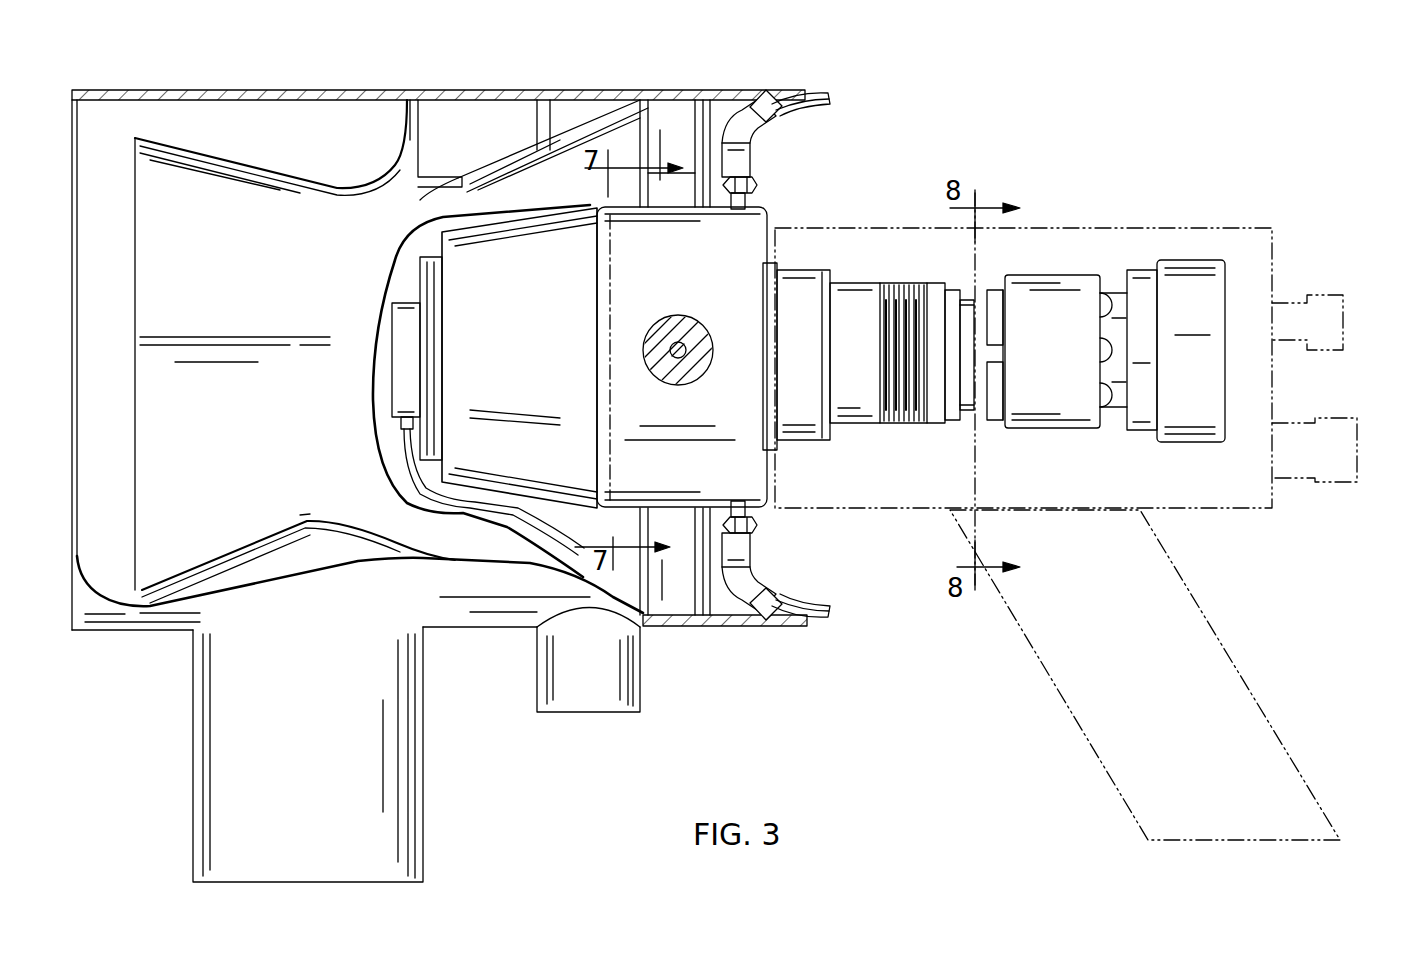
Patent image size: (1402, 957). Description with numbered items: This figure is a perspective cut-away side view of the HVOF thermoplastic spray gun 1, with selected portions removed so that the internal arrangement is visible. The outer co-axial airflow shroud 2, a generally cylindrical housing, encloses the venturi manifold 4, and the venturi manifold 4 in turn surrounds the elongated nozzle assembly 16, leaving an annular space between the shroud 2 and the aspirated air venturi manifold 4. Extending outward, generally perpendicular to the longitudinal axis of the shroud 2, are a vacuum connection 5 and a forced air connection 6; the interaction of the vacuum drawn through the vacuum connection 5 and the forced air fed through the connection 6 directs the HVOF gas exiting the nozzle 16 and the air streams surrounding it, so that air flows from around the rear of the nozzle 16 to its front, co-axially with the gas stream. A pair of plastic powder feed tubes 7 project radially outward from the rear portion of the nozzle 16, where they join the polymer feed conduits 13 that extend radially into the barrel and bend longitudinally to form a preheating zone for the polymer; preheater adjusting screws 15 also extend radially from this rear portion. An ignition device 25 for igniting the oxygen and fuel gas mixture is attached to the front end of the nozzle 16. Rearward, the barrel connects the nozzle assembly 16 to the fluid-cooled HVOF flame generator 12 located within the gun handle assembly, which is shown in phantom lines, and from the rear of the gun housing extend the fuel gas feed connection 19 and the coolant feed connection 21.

The spray gun 1 is at (790, 650).
The co-axial airflow shroud 2 is at (287, 90).
The venturi manifold assembly 4 is at (312, 213).
The vacuum connection 5 is at (227, 763).
The forced air connection 6 is at (620, 672).
The plastic powder feed tubes 7 is at (805, 93).
The fluid-cooled HVOF flame generator 12 is at (1043, 285).
The polymer feed conduits 13 is at (752, 158).
The preheater adjusting screws 15 is at (755, 192).
The nozzle assembly 16 is at (550, 262).
The fuel gas feed connection 19 is at (1337, 292).
The coolant feed connection 21 is at (1343, 433).
The ignition device 25 is at (400, 428).